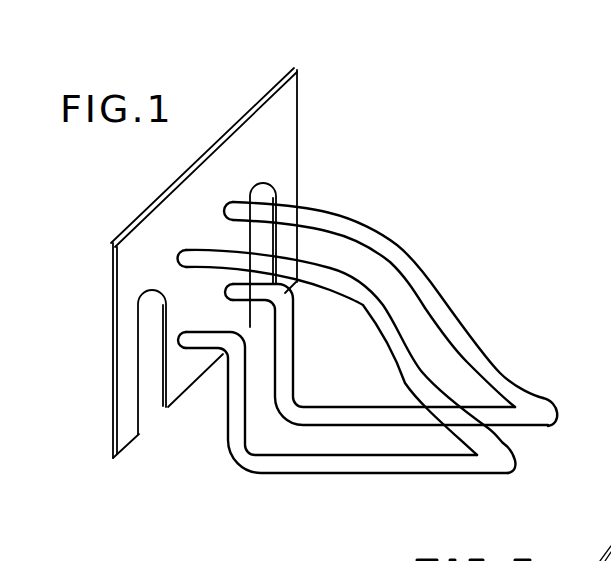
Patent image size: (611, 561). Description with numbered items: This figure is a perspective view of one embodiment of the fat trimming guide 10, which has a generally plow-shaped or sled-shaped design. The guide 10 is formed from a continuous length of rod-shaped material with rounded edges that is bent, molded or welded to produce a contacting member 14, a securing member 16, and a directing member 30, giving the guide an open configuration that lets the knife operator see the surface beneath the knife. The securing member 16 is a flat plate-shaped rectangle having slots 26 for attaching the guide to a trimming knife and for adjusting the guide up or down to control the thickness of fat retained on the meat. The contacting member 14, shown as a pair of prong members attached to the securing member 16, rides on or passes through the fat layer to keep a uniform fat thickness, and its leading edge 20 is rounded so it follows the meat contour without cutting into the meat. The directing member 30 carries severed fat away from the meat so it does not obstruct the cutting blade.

The fat trimming guide 10 is at (456, 283).
The contacting member 14 is at (357, 418).
The securing member 16 is at (132, 257).
The leading edge 20 is at (510, 461).
The slots 26 is at (150, 321).
The directing member 30 is at (352, 284).